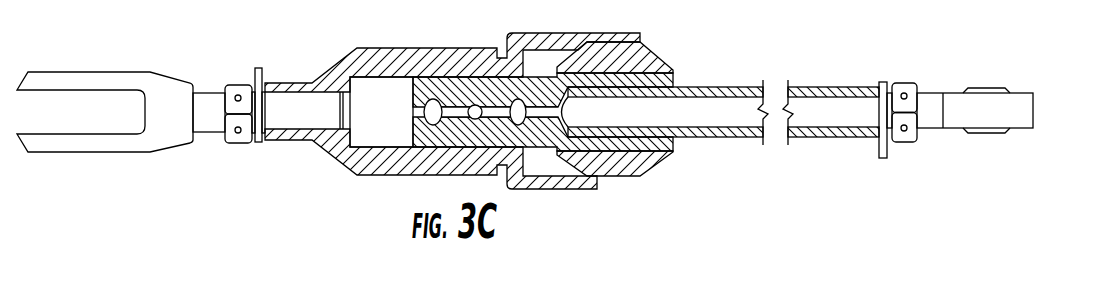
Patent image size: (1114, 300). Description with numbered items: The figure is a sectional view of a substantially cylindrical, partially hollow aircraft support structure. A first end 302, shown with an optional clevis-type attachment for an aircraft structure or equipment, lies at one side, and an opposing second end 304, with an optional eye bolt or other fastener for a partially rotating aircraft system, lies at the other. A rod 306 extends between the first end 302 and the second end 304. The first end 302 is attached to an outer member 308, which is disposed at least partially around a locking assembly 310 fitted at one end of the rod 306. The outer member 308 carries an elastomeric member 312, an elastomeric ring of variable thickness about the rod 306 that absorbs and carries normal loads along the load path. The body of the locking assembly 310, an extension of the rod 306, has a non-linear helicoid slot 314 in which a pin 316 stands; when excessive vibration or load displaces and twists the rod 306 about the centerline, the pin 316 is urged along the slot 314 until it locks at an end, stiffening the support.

The first end 302 is at (60, 162).
The second end 304 is at (1010, 143).
The rod 306 is at (698, 86).
The outer member 308 is at (437, 67).
The locking assembly 310 is at (397, 104).
The elastomeric member 312 is at (650, 54).
The slot 314 is at (430, 120).
The pin 316 is at (482, 120).